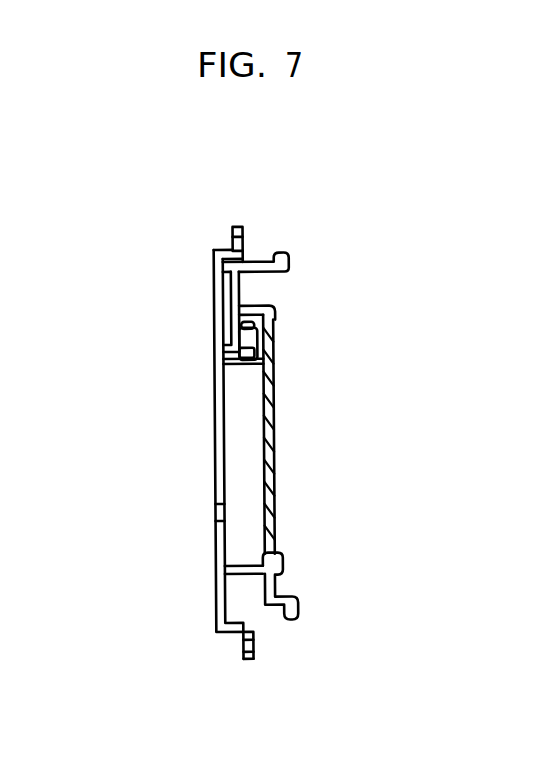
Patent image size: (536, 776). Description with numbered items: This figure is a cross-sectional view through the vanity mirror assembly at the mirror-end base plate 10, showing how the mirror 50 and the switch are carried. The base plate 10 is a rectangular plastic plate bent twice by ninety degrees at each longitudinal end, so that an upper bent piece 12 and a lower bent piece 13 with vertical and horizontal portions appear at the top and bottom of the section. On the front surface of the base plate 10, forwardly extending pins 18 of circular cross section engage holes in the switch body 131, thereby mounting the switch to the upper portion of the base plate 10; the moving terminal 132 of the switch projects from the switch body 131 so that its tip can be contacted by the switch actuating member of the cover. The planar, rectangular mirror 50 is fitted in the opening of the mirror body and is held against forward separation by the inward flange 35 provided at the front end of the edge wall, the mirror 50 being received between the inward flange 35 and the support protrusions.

The mirror-end base plate 10 is at (218, 480).
The upper bent piece 12 is at (240, 228).
The lower bent piece 13 is at (243, 657).
The switch body 131 is at (246, 337).
The moving terminal 132 is at (240, 321).
The pins 18 is at (230, 353).
The inward flange 35 is at (277, 314).
The mirror 50 is at (275, 474).